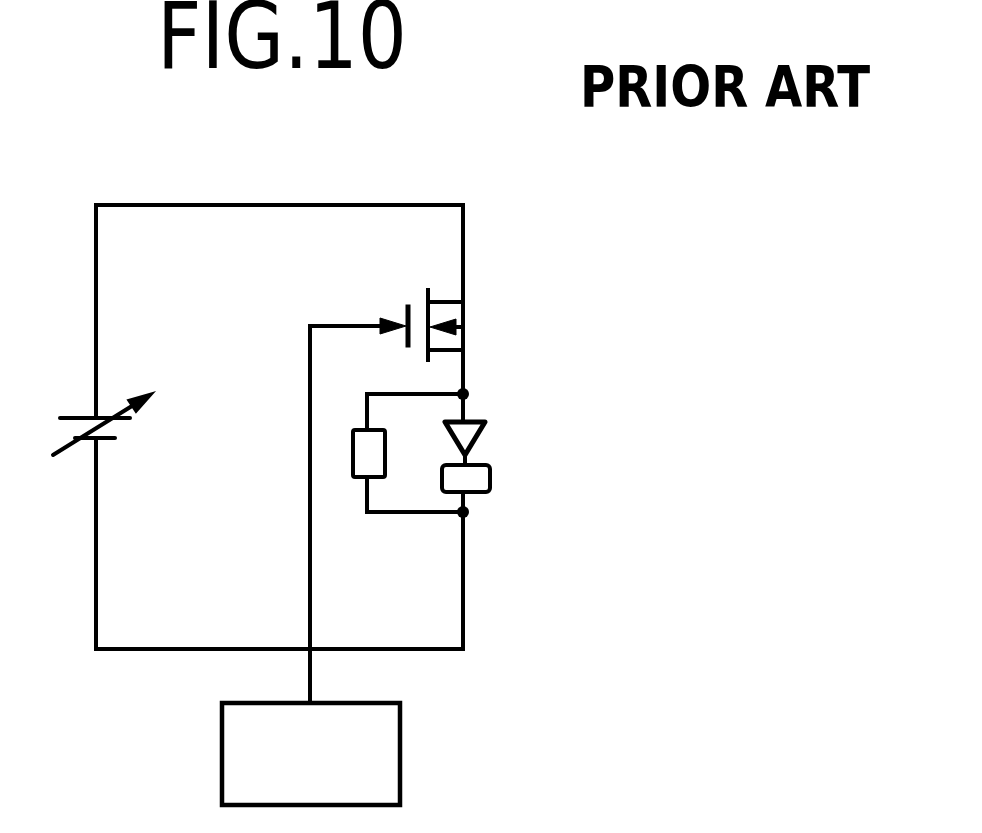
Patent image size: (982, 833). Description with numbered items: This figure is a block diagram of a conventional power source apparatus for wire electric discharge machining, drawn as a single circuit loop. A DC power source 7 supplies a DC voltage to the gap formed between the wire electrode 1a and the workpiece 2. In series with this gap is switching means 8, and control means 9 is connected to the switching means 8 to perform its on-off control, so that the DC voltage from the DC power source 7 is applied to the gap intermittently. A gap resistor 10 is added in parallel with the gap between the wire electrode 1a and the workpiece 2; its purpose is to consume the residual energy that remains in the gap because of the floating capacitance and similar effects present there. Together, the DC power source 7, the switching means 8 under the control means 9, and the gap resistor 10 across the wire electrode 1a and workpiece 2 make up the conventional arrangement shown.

The DC power source 7 is at (72, 416).
The switching means 8 is at (463, 292).
The gap resistor 10 is at (354, 477).
The wire electrode 1a is at (486, 440).
The workpiece 2 is at (491, 478).
The control means 9 is at (402, 752).